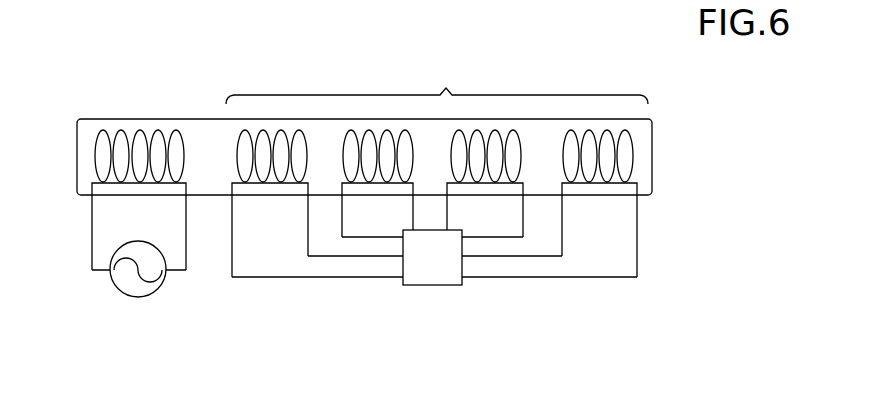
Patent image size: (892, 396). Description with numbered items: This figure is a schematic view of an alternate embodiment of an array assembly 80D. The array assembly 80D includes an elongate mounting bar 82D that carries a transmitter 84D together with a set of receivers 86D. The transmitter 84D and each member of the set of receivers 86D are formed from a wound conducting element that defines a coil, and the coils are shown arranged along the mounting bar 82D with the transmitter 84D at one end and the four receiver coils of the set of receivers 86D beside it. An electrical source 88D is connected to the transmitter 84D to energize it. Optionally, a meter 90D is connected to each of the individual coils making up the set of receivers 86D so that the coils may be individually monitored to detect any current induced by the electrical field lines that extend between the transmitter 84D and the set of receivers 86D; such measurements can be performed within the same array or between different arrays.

The array assembly 80D is at (658, 110).
The elongate mounting bar 82D is at (652, 158).
The transmitter 84D is at (138, 120).
The set of receivers 86D is at (447, 90).
The electrical source 88D is at (130, 298).
The meter 90D is at (432, 291).